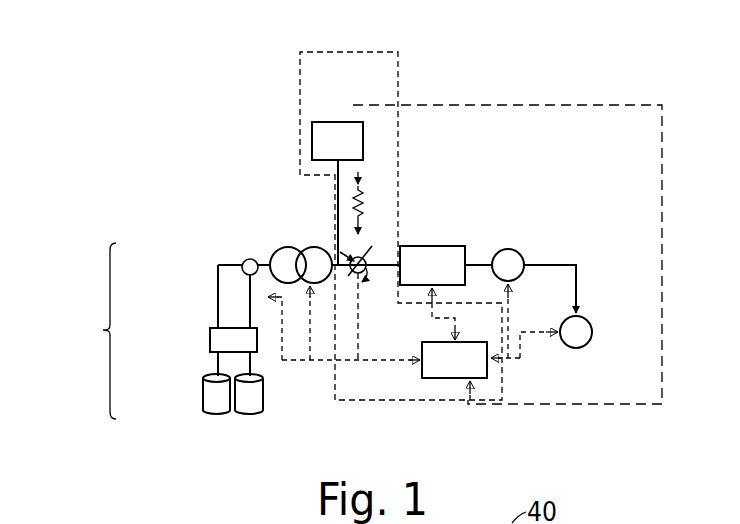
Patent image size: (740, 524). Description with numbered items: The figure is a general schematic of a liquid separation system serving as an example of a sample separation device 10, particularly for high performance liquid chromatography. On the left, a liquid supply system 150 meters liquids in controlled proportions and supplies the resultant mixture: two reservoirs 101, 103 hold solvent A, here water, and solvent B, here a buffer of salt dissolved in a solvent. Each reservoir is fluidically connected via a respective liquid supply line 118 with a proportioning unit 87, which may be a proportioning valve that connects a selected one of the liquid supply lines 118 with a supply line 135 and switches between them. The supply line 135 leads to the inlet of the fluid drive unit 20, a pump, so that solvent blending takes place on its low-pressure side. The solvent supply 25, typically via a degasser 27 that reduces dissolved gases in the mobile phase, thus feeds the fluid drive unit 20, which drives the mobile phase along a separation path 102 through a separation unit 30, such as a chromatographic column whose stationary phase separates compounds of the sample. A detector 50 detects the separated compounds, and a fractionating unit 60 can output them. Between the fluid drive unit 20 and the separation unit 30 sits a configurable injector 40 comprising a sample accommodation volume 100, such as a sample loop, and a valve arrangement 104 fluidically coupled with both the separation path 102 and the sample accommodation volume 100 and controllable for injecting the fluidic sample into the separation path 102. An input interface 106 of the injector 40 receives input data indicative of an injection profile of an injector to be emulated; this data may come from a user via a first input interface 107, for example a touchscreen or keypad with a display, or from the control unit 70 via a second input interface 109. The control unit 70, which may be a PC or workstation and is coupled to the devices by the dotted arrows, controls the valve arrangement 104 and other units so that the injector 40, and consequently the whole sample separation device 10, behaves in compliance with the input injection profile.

The sample separation device 10 is at (578, 222).
The fluid drive unit 20 is at (296, 248).
The solvent supply 25 is at (90, 331).
The degasser 27 is at (209, 337).
The separation unit 30 is at (440, 244).
The injector 40 is at (294, 111).
The detector 50 is at (508, 249).
The fractionating unit 60 is at (592, 335).
The control unit 70 is at (452, 381).
The proportioning unit 87 is at (246, 259).
The sample accommodation volume 100 is at (364, 188).
The reservoir 101 is at (212, 416).
The separation path 102 is at (372, 272).
The reservoir 103 is at (250, 416).
The valve arrangement 104 is at (352, 276).
The input interface 106 is at (337, 193).
The first input interface 107 is at (321, 117).
The second input interface 109 is at (344, 117).
The liquid supply line 118 is at (216, 290).
The supply line 135 is at (263, 263).
The liquid supply system 150 is at (184, 214).